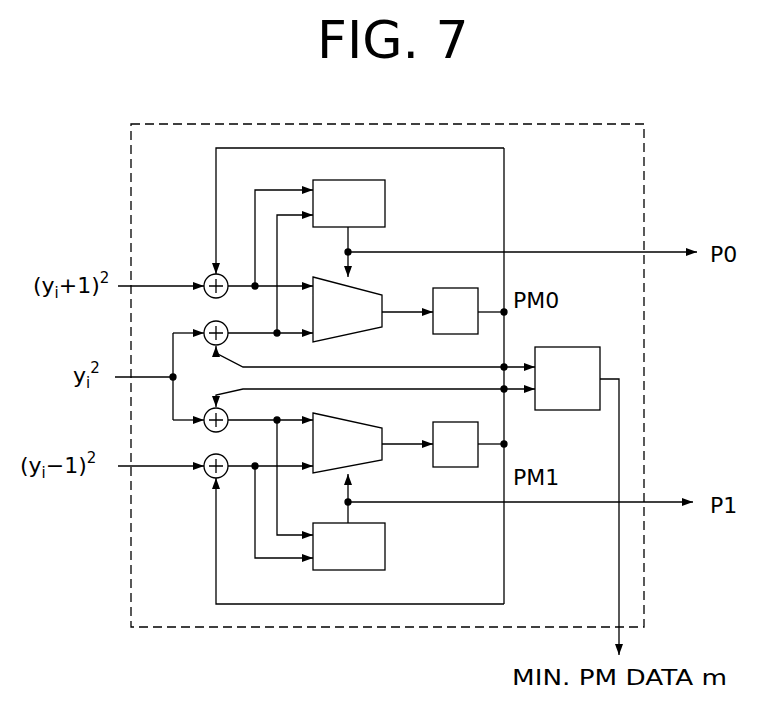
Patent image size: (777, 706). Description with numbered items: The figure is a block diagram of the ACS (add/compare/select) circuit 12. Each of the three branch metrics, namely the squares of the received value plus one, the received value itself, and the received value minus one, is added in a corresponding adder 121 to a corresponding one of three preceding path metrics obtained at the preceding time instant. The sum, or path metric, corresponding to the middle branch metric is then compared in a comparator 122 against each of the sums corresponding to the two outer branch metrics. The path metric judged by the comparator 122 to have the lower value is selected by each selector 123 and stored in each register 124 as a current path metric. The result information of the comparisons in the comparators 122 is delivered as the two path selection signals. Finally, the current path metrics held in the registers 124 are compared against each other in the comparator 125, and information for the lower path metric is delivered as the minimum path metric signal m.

The ACS circuit 12 is at (647, 162).
The adder 121 is at (208, 275).
The comparator 122 is at (385, 200).
The selector 123 is at (348, 340).
The register 124 is at (440, 288).
The comparator 125 is at (583, 347).